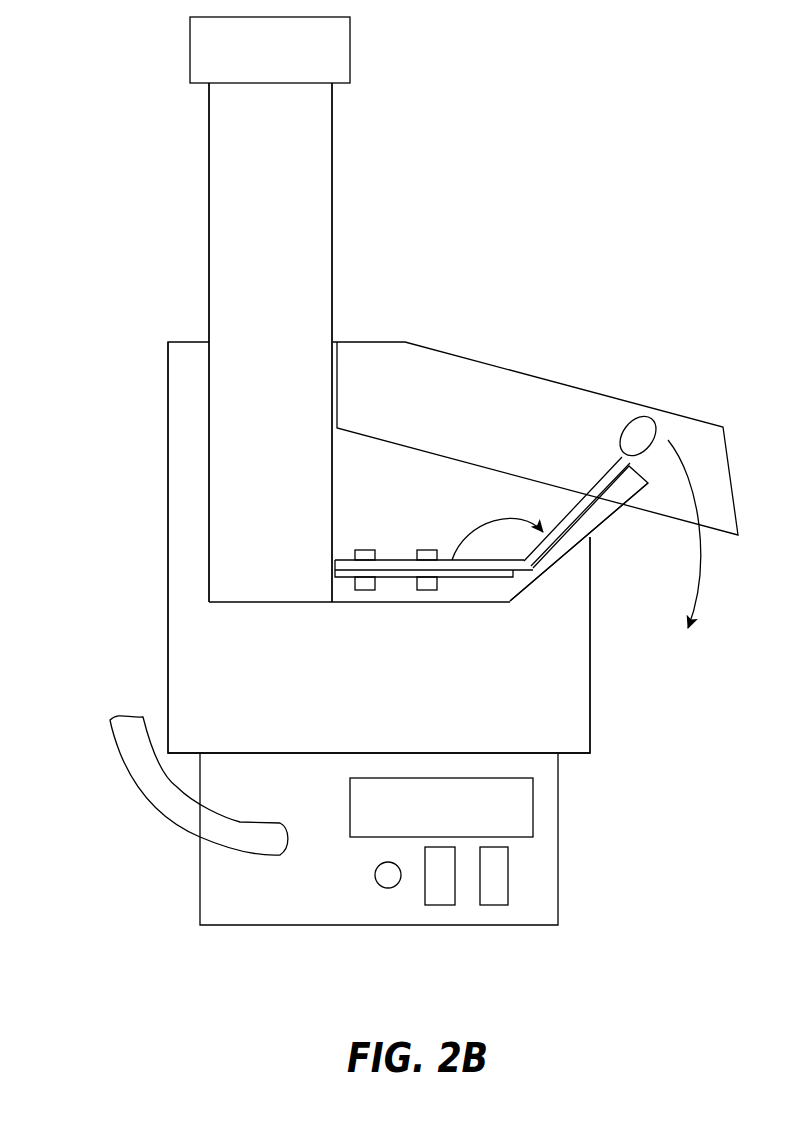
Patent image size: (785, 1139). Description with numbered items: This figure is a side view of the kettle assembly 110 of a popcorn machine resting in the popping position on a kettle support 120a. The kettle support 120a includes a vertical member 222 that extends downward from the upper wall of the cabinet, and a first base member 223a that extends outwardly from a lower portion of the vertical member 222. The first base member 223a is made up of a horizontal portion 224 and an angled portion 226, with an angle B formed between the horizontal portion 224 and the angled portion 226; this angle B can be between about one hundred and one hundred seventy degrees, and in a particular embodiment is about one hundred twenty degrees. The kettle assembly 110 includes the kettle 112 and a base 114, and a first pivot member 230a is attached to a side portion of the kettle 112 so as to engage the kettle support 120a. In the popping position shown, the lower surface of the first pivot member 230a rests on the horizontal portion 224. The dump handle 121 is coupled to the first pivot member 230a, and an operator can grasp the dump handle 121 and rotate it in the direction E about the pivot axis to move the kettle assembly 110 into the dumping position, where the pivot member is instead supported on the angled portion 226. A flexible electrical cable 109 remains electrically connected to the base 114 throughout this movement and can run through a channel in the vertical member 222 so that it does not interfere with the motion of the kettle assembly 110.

The kettle assembly 110 is at (143, 400).
The kettle 112 is at (565, 680).
The base 114 is at (537, 857).
The electrical cable 109 is at (143, 762).
The vertical member 222 is at (333, 187).
The first kettle support 120a is at (350, 280).
The dump handle 121 is at (602, 482).
The angled portion 226 is at (605, 507).
The first base member 223a is at (570, 545).
The horizontal portion 224 is at (396, 593).
The first pivot member 230a is at (463, 573).
The angle B is at (458, 555).
The direction E is at (684, 546).